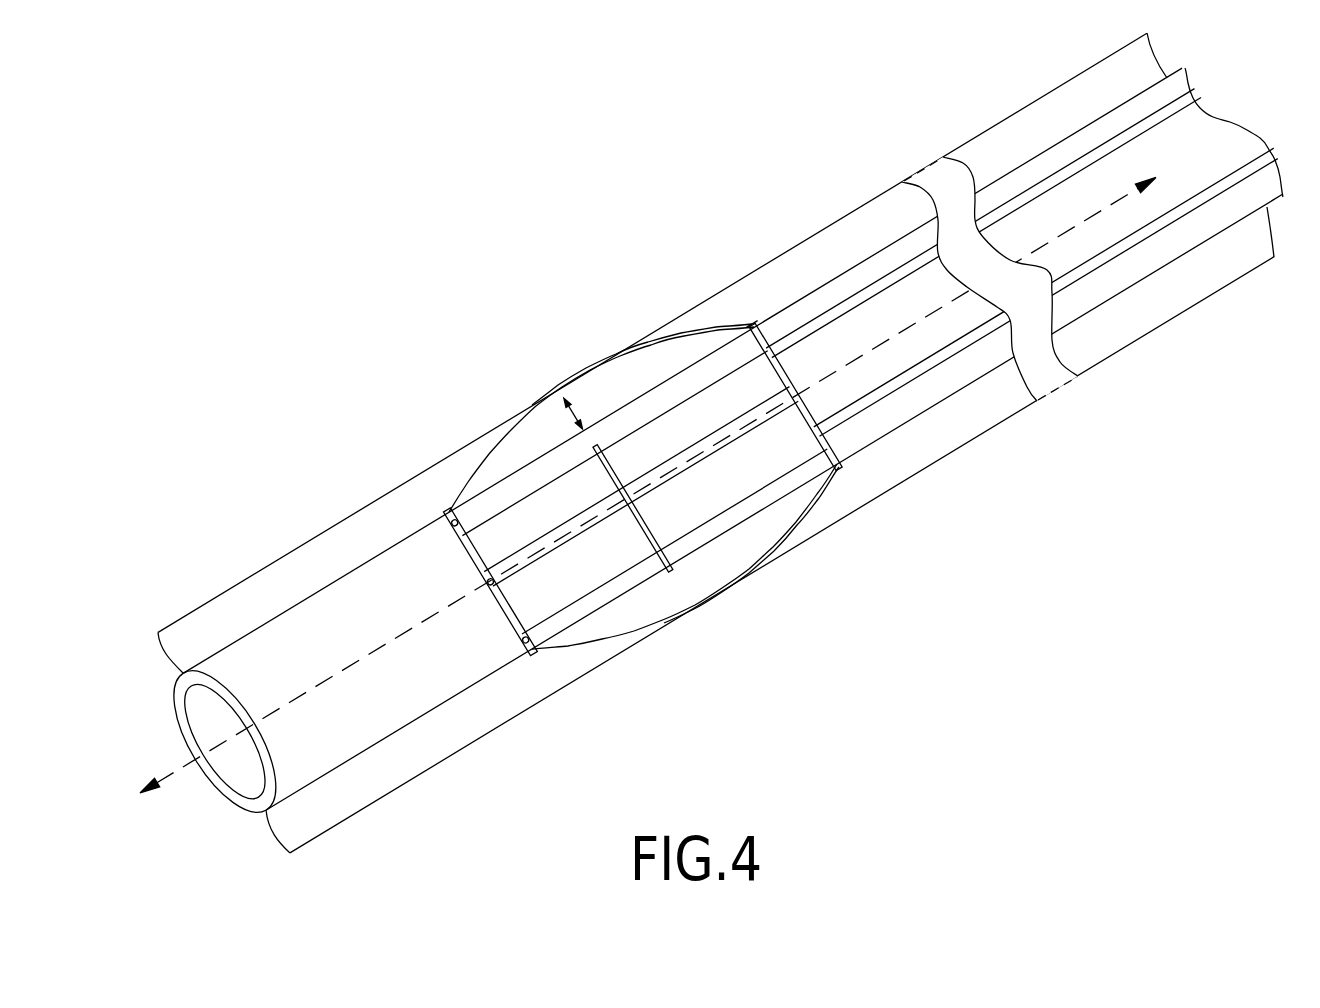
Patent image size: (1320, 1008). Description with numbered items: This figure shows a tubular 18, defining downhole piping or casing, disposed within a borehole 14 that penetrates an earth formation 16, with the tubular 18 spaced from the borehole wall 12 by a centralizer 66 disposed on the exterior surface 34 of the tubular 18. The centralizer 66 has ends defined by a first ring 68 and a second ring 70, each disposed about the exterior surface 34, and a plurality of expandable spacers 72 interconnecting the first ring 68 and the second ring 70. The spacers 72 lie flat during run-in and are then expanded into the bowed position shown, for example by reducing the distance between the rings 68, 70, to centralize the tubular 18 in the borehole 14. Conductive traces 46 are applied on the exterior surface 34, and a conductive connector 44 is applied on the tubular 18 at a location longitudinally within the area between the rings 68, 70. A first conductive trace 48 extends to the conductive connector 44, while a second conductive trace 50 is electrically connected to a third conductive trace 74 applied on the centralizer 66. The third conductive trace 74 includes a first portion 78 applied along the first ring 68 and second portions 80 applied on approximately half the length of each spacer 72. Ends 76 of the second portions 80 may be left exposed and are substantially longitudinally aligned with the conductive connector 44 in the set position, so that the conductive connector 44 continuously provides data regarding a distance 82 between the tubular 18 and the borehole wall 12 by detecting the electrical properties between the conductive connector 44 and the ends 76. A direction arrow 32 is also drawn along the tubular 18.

The borehole wall 12 is at (457, 748).
The borehole 14 is at (413, 780).
The earth formation 16 is at (629, 511).
The tubular 18 is at (320, 780).
The distal direction 32 is at (172, 775).
The exterior surface 34 is at (357, 602).
The conductive connector 44 is at (635, 567).
The conductive traces 46 is at (1022, 276).
The first conductive trace 48 is at (877, 283).
The second conductive trace 50 is at (917, 373).
The centralizer 66 is at (684, 610).
The first ring 68 is at (757, 332).
The second ring 70 is at (445, 517).
The expandable spacers 72 is at (637, 541).
The third conductive trace 74 is at (836, 439).
The ends 76 is at (637, 530).
The first portion 78 is at (794, 396).
The second portions 80 is at (645, 343).
The distance 82 is at (577, 412).